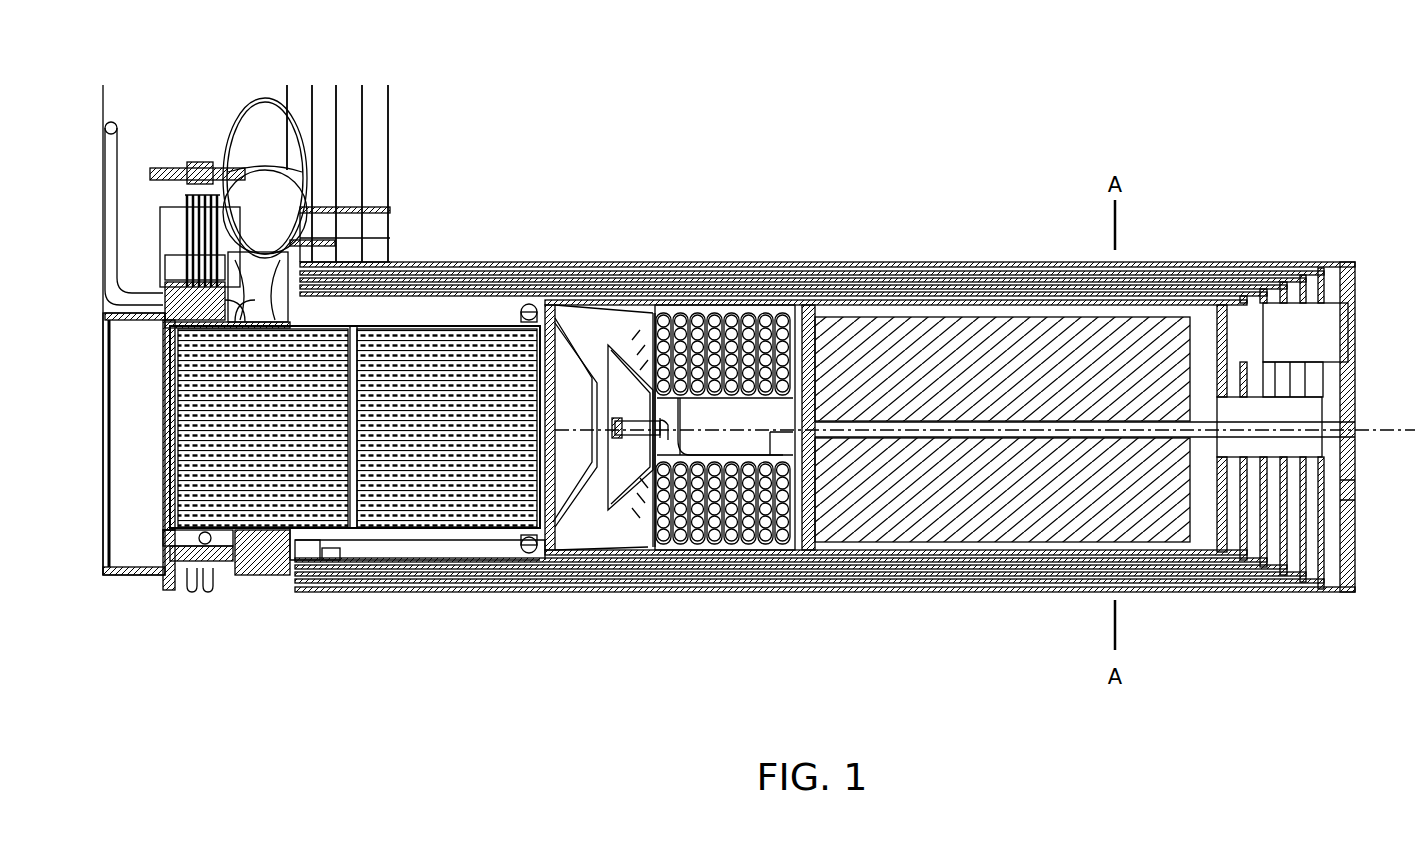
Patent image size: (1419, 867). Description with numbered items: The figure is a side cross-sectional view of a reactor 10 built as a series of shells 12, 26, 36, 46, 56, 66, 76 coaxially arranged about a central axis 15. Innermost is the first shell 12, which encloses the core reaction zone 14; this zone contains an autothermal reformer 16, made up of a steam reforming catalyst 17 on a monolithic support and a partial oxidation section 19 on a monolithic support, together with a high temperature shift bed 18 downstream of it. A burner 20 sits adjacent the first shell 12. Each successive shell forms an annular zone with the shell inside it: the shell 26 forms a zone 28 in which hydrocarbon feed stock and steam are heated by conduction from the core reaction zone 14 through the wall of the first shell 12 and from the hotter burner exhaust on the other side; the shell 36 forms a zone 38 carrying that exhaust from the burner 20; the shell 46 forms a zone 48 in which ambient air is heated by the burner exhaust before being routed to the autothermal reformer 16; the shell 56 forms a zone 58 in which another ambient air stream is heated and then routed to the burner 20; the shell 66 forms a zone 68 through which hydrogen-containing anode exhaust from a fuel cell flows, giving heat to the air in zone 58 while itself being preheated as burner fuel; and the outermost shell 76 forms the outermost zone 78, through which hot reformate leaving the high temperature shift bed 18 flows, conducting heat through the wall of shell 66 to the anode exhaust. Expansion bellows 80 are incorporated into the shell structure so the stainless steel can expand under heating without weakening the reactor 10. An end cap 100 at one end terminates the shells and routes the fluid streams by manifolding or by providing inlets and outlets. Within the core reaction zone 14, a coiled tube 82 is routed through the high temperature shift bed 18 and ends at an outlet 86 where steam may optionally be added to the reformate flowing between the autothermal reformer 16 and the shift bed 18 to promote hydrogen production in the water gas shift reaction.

The reactor 10 is at (1048, 146).
The first shell 12 is at (444, 326).
The core reaction zone 14 is at (489, 326).
The central axis 15 is at (1372, 430).
The autothermal reformer 16 is at (322, 468).
The steam reforming catalyst 17 is at (186, 367).
The high temperature shift bed 18 is at (1160, 340).
The partial oxidation section 19 is at (443, 494).
The burner 20 is at (459, 552).
The shell 26 is at (628, 545).
The zone 28 is at (730, 305).
The shell 36 is at (825, 563).
The zone 38 is at (816, 297).
The shell 46 is at (906, 570).
The zone 48 is at (896, 290).
The shell 56 is at (950, 577).
The zone 58 is at (945, 283).
The shell 66 is at (998, 583).
The zone 68 is at (993, 277).
The outermost shell 76 is at (1046, 592).
The outermost zone 78 is at (1045, 270).
The expansion bellows 80 is at (200, 594).
The tube 82 is at (1208, 335).
The outlet 86 is at (613, 505).
The end cap 100 is at (1358, 535).